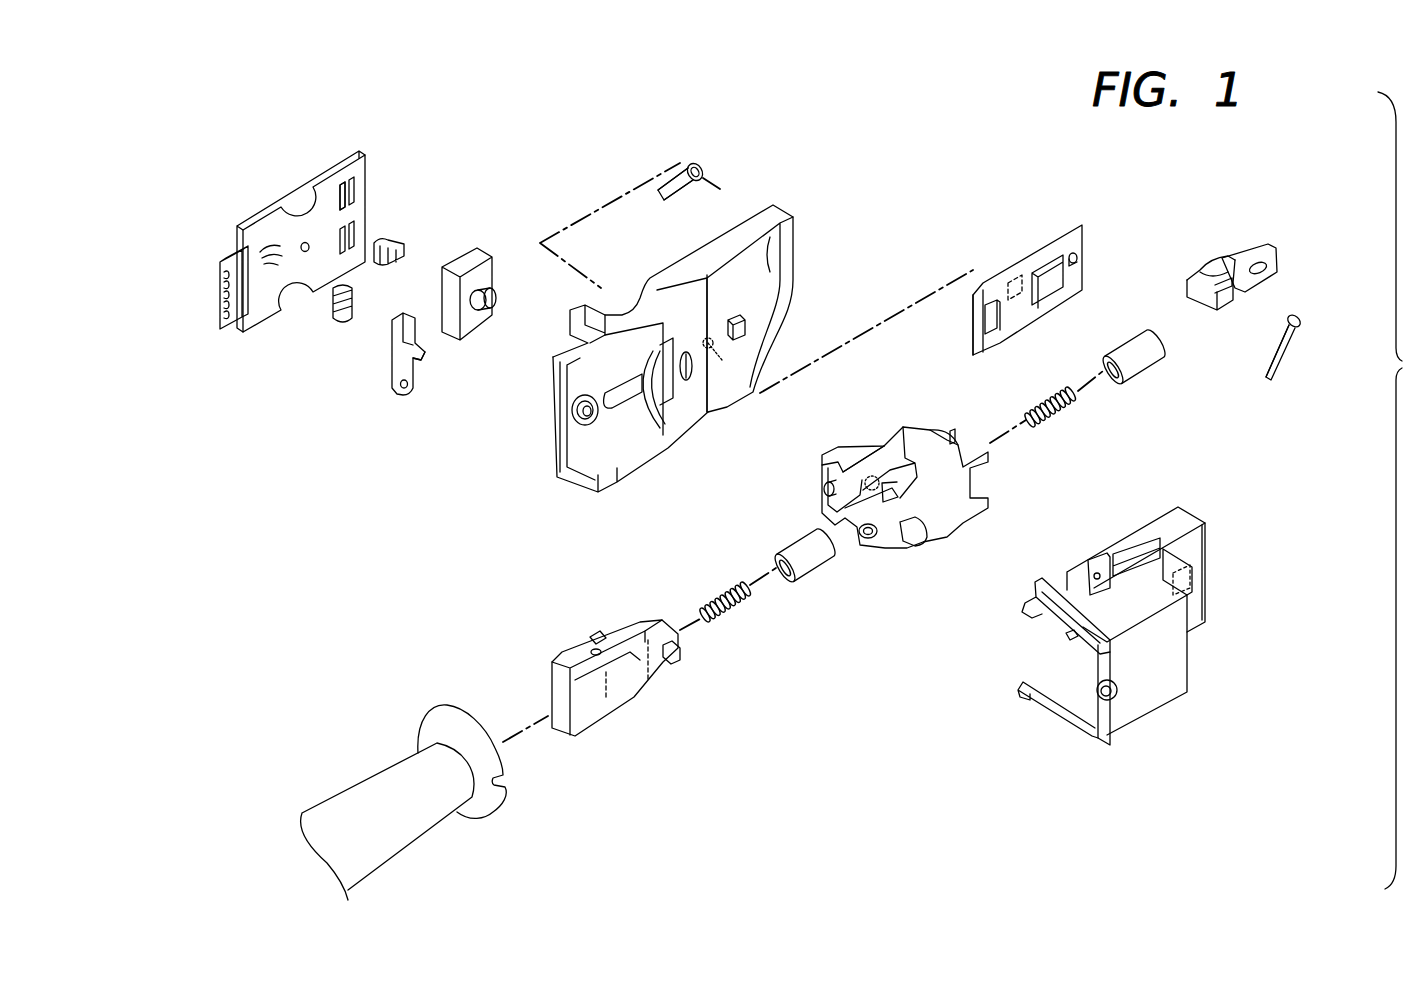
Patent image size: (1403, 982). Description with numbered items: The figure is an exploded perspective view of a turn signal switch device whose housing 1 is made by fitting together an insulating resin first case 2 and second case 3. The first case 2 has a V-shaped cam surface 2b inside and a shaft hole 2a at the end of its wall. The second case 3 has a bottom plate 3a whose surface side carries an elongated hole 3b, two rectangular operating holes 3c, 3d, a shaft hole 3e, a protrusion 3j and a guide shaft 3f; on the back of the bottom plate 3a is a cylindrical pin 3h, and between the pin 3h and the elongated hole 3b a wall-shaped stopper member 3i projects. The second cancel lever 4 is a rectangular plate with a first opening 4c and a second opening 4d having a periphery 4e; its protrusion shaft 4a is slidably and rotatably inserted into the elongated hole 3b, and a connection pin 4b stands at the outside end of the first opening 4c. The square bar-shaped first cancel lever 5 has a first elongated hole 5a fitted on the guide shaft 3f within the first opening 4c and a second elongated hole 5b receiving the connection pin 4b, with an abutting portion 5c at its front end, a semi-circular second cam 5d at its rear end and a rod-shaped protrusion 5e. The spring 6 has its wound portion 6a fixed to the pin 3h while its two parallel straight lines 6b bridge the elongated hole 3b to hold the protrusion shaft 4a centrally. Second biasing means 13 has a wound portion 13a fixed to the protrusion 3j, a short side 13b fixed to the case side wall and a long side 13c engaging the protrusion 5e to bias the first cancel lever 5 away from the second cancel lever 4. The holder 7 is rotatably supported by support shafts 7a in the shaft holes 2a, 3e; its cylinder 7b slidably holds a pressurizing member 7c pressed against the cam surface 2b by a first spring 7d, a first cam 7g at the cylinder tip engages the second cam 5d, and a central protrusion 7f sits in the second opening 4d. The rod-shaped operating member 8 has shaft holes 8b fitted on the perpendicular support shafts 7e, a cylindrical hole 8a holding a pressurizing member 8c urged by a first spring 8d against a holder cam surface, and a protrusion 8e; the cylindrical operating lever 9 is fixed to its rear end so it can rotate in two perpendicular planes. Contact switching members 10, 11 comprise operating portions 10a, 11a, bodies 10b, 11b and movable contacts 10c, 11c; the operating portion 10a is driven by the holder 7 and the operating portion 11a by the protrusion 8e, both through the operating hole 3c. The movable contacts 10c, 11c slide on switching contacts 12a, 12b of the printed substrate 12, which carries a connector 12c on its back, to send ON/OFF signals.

The housing 1 is at (810, 200).
The first case 2 is at (1150, 644).
The shaft hole 2a is at (1114, 698).
The cam surface 2b is at (1192, 578).
The second case 3 is at (680, 347).
The bottom plate 3a is at (725, 362).
The elongated hole 3b is at (692, 380).
The operating hole 3c is at (622, 398).
The operating hole 3d is at (664, 390).
The shaft hole 3e is at (576, 428).
The guide shaft 3f is at (768, 328).
The pin 3h is at (705, 338).
The stopper member 3i is at (703, 343).
The protrusion 3j is at (770, 265).
The second cancel lever 4 is at (1037, 270).
The protrusion shaft 4a is at (1015, 288).
The connection pin 4b is at (1086, 250).
The first opening 4c is at (1052, 280).
The second opening 4d is at (982, 322).
The periphery 4e is at (994, 322).
The first cancel lever 5 is at (1257, 263).
The first elongated hole 5a is at (1230, 257).
The second elongated hole 5b is at (1262, 270).
The abutting portion 5c is at (1276, 258).
The second cam 5d is at (1200, 300).
The protrusion 5e is at (1238, 293).
The spring 6 is at (688, 168).
The wound portion 6a is at (700, 167).
The straight lines 6b is at (672, 190).
The holder 7 is at (983, 499).
The support shafts 7a is at (822, 468).
The cylinder 7b is at (922, 447).
The pressurizing member 7c is at (1140, 372).
The first spring 7d is at (1058, 417).
The support shafts 7e is at (860, 505).
The protrusion 7f is at (858, 458).
The first cam 7g is at (951, 430).
The operating member 8 is at (693, 657).
The cylindrical hole 8a is at (650, 662).
The shaft holes 8b is at (590, 650).
The pressurizing member 8c is at (806, 578).
The first spring 8d is at (724, 610).
The protrusion 8e is at (598, 636).
The operating lever 9 is at (408, 830).
The contact switching member 10 is at (468, 198).
The operating portion 10a is at (498, 300).
The body 10b is at (480, 258).
The movable contact 10c is at (400, 240).
The contact switching member 11 is at (340, 401).
The operating portion 11a is at (418, 362).
The body 11b is at (398, 355).
The movable contact 11c is at (335, 318).
The printed substrate 12 is at (264, 314).
The switching contact 12a is at (337, 192).
The switching contact 12b is at (262, 232).
The connector 12c is at (228, 262).
The second biasing means 13 is at (1299, 362).
The wound portion 13a is at (1300, 319).
The short side 13b is at (1280, 326).
The long side 13c is at (1270, 378).